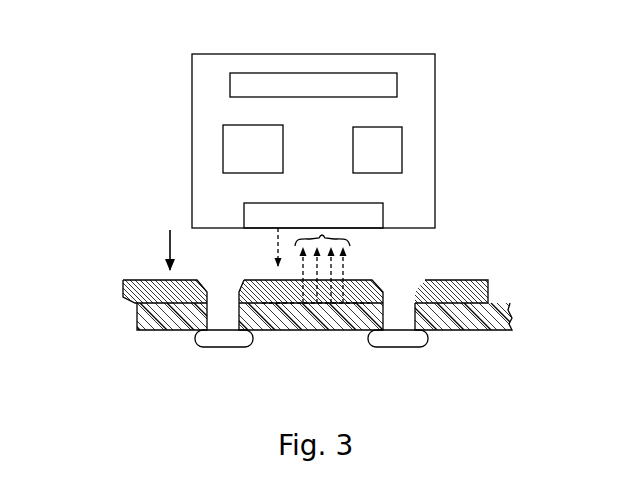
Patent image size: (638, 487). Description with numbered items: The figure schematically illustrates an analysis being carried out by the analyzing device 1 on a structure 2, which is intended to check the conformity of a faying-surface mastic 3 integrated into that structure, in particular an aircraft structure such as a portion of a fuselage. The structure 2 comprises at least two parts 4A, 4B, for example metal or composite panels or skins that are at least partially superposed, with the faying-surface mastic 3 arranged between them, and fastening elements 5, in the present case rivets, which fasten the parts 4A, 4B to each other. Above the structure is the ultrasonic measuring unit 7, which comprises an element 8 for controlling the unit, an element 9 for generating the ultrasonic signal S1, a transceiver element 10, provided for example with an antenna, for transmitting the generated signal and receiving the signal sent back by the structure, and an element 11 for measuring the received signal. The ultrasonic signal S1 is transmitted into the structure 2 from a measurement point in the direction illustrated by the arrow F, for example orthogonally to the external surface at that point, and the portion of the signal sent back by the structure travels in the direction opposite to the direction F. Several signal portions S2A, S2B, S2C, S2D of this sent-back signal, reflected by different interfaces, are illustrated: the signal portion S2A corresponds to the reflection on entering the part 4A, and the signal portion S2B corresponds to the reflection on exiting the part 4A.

The analyzing device 1 is at (163, 71).
The structure 2 is at (123, 272).
The faying-surface mastic 3 is at (320, 303).
The first part 4A is at (463, 280).
The second part 4B is at (477, 331).
The fastening elements 5 is at (222, 347).
The ultrasonic measuring unit 7 is at (435, 128).
The control element 8 is at (397, 80).
The generating element 9 is at (223, 151).
The transceiver element 10 is at (244, 219).
The measuring element 11 is at (402, 152).
The transmission direction F is at (165, 247).
The ultrasonic signal S1 is at (276, 238).
The first signal portion S2A is at (306, 265).
The second signal portion S2B is at (335, 267).
The third signal portion S2C is at (345, 262).
The fourth signal portion S2D is at (347, 275).